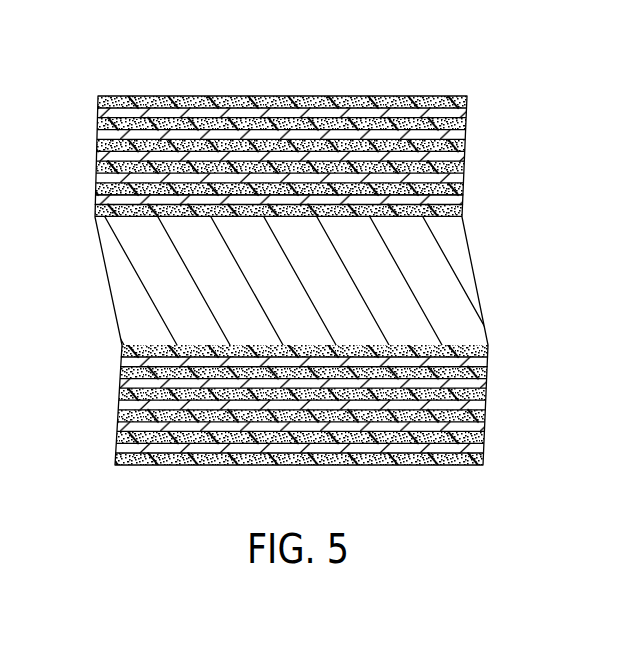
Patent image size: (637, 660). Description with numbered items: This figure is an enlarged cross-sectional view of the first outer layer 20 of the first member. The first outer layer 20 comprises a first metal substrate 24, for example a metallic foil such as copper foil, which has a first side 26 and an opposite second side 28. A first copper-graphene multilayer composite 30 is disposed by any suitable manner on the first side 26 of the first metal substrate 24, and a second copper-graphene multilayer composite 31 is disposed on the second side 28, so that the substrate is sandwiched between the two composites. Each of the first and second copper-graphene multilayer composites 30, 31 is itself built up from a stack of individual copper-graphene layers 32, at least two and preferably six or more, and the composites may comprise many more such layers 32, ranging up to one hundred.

The first outer layer 20 is at (150, 52).
The first metal substrate 24 is at (138, 283).
The first side 26 is at (121, 216).
The second side 28 is at (128, 345).
The first copper-graphene multilayer composite 30 is at (83, 88).
The second copper-graphene multilayer composite 31 is at (105, 343).
The copper-graphene layer 32 is at (462, 195).